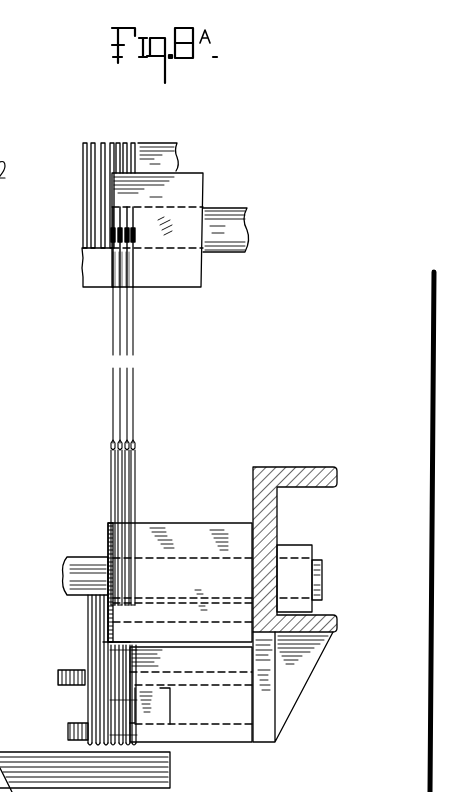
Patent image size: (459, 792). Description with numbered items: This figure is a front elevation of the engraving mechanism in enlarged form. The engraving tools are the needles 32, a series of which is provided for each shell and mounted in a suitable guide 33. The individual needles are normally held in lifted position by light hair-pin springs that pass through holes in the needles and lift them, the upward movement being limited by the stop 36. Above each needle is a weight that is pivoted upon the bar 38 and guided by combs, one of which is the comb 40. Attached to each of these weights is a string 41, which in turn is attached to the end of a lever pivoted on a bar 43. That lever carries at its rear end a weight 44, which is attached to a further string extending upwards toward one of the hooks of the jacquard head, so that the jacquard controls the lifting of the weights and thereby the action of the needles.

The needles 32 is at (88, 621).
The guide 33 is at (175, 733).
The stop 36 is at (90, 643).
The bar 38 is at (100, 568).
The comb 40 is at (197, 527).
The string 41 is at (112, 332).
The bar 43 is at (238, 208).
The weight 44 is at (110, 222).